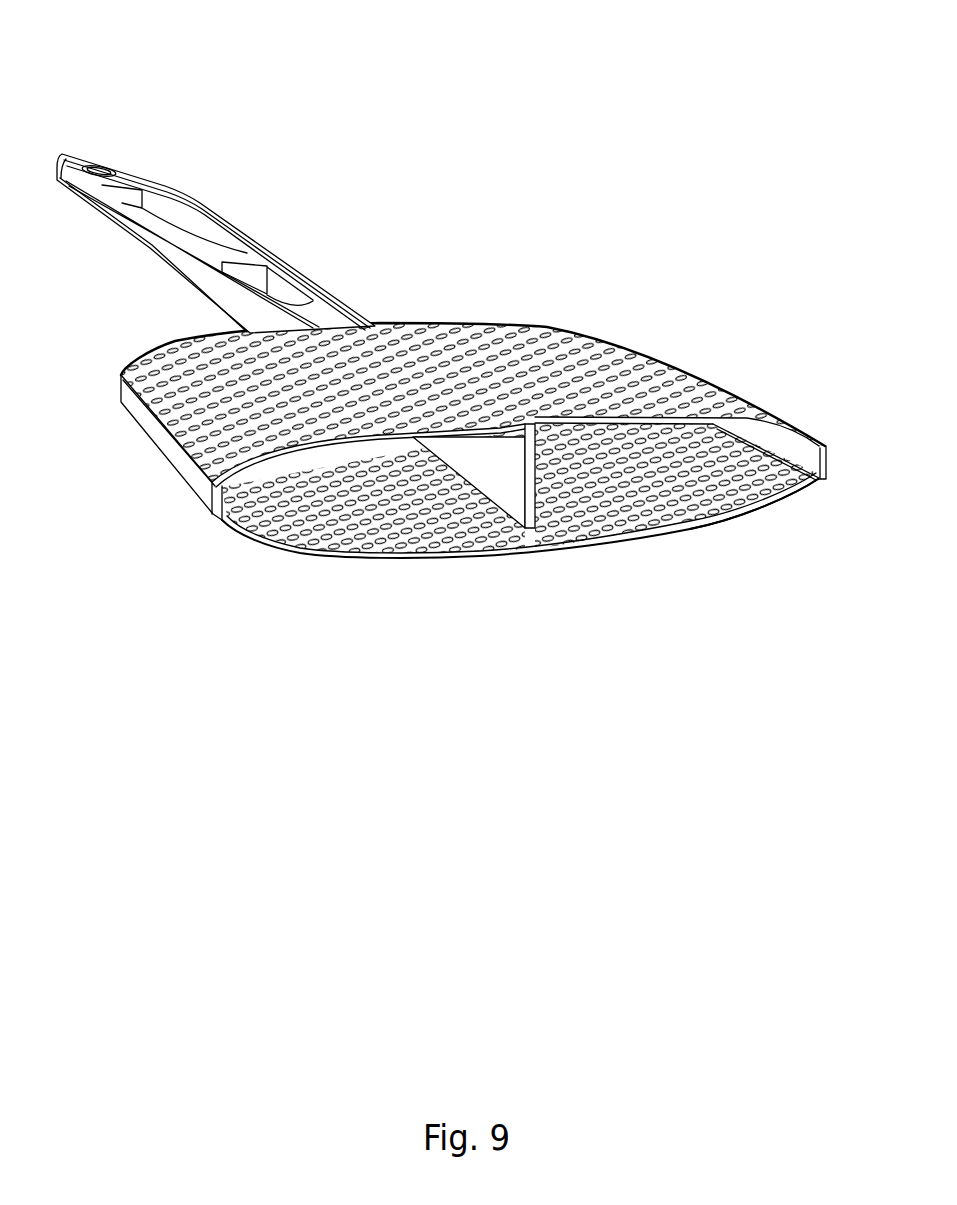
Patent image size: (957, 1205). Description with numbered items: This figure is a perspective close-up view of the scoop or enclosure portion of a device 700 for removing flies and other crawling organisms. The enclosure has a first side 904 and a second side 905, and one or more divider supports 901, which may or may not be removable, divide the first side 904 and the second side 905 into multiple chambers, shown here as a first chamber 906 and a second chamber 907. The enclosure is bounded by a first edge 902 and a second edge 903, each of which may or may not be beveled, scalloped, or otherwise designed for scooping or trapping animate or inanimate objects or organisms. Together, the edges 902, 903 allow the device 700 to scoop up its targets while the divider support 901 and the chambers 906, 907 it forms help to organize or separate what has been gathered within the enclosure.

The device 700 is at (577, 122).
The divider support 901 is at (533, 503).
The first edge 902 is at (783, 511).
The second edge 903 is at (561, 420).
The first side 904 is at (330, 525).
The second side 905 is at (250, 400).
The first chamber 906 is at (407, 537).
The second chamber 907 is at (688, 512).